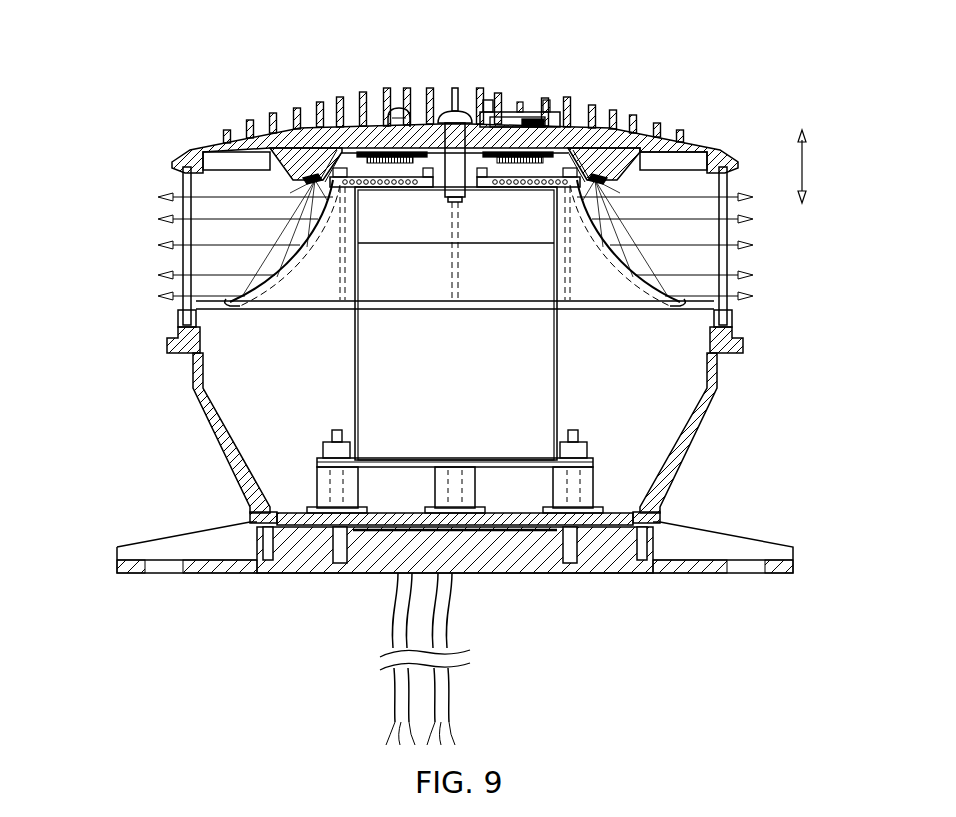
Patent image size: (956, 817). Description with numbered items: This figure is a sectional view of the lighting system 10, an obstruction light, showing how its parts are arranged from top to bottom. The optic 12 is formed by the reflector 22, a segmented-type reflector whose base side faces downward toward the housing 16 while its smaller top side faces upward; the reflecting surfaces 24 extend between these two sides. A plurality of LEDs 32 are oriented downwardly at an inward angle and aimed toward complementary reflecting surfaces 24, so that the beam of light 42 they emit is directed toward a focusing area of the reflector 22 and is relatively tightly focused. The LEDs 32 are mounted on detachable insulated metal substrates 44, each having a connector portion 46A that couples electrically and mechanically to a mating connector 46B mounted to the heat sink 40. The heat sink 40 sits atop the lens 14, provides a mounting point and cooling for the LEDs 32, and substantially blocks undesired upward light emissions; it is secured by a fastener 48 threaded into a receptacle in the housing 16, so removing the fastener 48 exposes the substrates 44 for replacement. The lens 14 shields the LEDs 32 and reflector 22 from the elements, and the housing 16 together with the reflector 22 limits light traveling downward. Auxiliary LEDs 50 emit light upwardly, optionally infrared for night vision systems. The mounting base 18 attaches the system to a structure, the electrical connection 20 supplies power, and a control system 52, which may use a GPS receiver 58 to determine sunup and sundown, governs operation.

The lighting system 10 is at (159, 91).
The optic 12 is at (172, 313).
The lens 14 is at (185, 190).
The housing 16 is at (720, 378).
The mounting base 18 is at (183, 530).
The electrical connection 20 is at (497, 698).
The reflector 22 is at (312, 300).
The reflecting surfaces 24 is at (280, 268).
The LEDs 32 is at (298, 190).
The heat sink 40 is at (725, 148).
The beam of light 42 is at (160, 237).
The insulated metal substrates 44 is at (418, 168).
The connector portion 46A is at (378, 128).
The mating connector 46B is at (560, 128).
The fastener 48 is at (452, 108).
The auxiliary LEDs 50 is at (400, 108).
The control system 52 is at (493, 112).
The global positioning satellite (GPS) receiver 58 is at (535, 112).